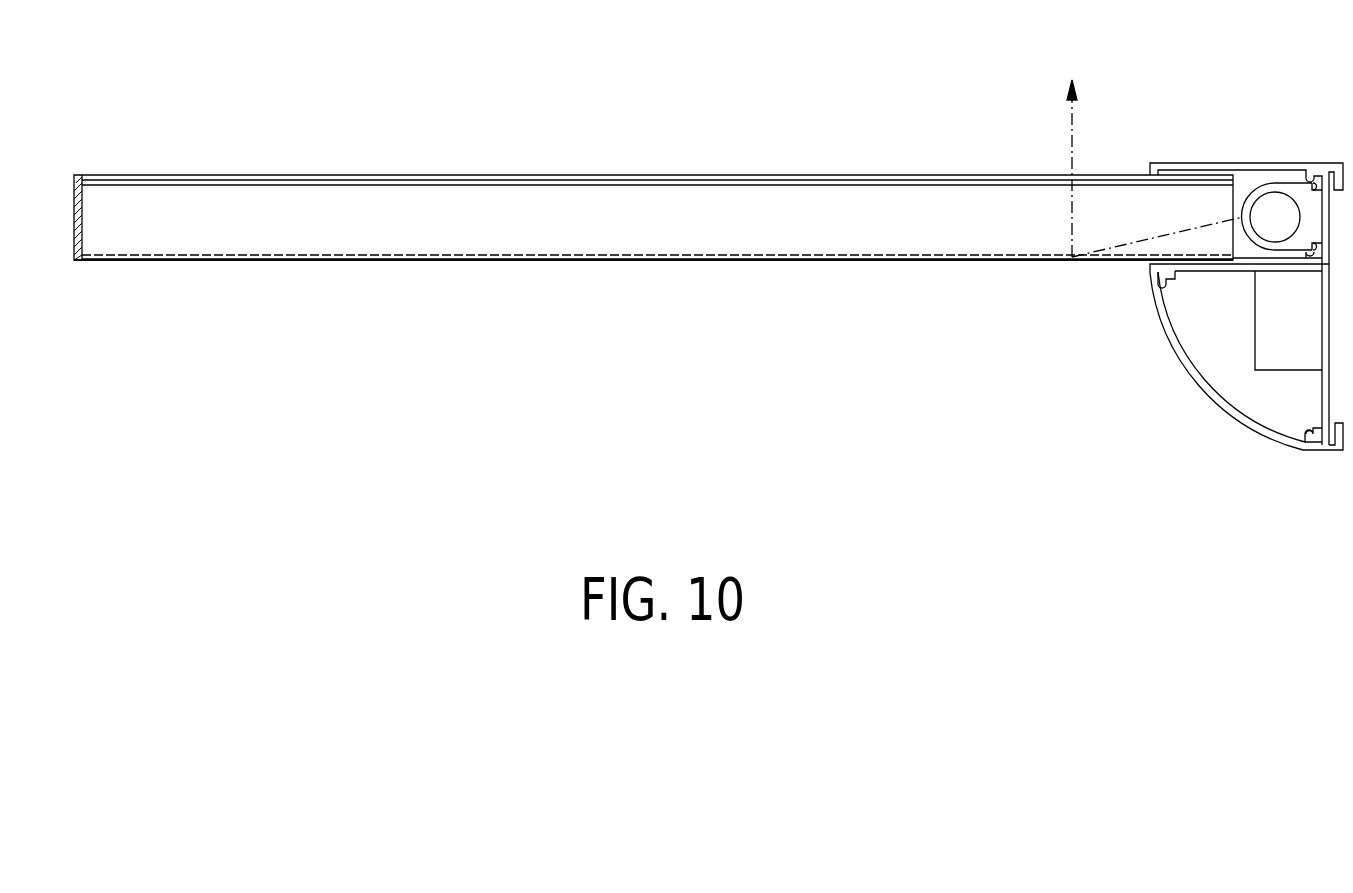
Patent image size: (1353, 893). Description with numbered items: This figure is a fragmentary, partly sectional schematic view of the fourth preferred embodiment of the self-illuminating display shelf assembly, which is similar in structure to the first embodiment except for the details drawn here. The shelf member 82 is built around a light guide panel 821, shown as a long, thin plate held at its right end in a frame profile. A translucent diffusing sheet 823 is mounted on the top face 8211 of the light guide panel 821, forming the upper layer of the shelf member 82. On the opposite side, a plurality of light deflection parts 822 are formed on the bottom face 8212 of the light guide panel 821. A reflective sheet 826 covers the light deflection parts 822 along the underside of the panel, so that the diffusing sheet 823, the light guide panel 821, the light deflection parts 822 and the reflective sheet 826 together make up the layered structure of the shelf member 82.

The shelf member 82 is at (653, 237).
The light guide panel 821 is at (320, 196).
The top face 8211 is at (595, 178).
The bottom face 8212 is at (653, 258).
The light deflection parts 822 is at (381, 258).
The translucent diffusing sheet 823 is at (677, 183).
The reflective sheet 826 is at (553, 262).